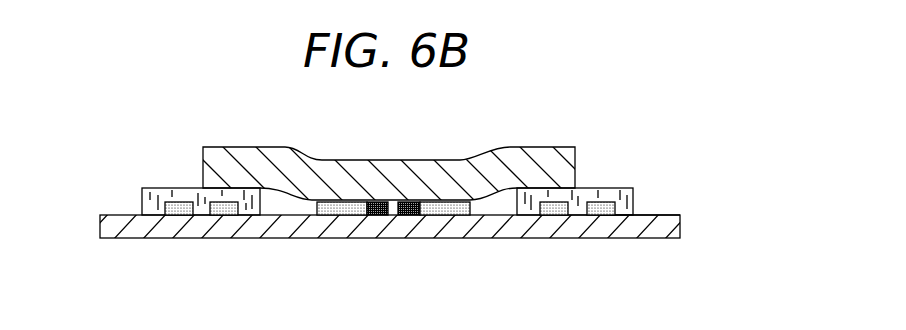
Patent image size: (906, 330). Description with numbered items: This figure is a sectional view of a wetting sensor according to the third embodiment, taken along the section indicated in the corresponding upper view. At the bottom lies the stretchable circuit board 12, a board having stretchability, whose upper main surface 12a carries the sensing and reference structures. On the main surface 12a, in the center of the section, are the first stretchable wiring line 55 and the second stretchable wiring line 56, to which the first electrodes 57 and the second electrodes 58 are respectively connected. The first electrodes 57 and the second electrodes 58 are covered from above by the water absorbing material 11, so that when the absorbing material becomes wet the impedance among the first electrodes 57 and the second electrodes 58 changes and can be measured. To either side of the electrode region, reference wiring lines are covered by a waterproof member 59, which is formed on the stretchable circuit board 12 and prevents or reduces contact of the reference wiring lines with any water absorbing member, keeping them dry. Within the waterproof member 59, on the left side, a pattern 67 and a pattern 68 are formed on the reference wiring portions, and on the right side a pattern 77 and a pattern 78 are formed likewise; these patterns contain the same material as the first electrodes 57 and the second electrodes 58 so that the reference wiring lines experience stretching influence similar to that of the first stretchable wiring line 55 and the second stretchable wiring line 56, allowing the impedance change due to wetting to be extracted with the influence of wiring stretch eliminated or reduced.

The water absorbing material 11 is at (530, 160).
The stretchable circuit board 12 is at (682, 225).
The main surface 12a is at (667, 209).
The first stretchable wiring line 55 is at (377, 202).
The second stretchable wiring line 56 is at (407, 202).
The first electrodes 57 is at (333, 202).
The second electrodes 58 is at (448, 202).
The waterproof member 59 is at (143, 203).
The pattern 67 is at (178, 202).
The pattern 68 is at (227, 202).
The pattern 77 is at (555, 202).
The pattern 78 is at (600, 202).